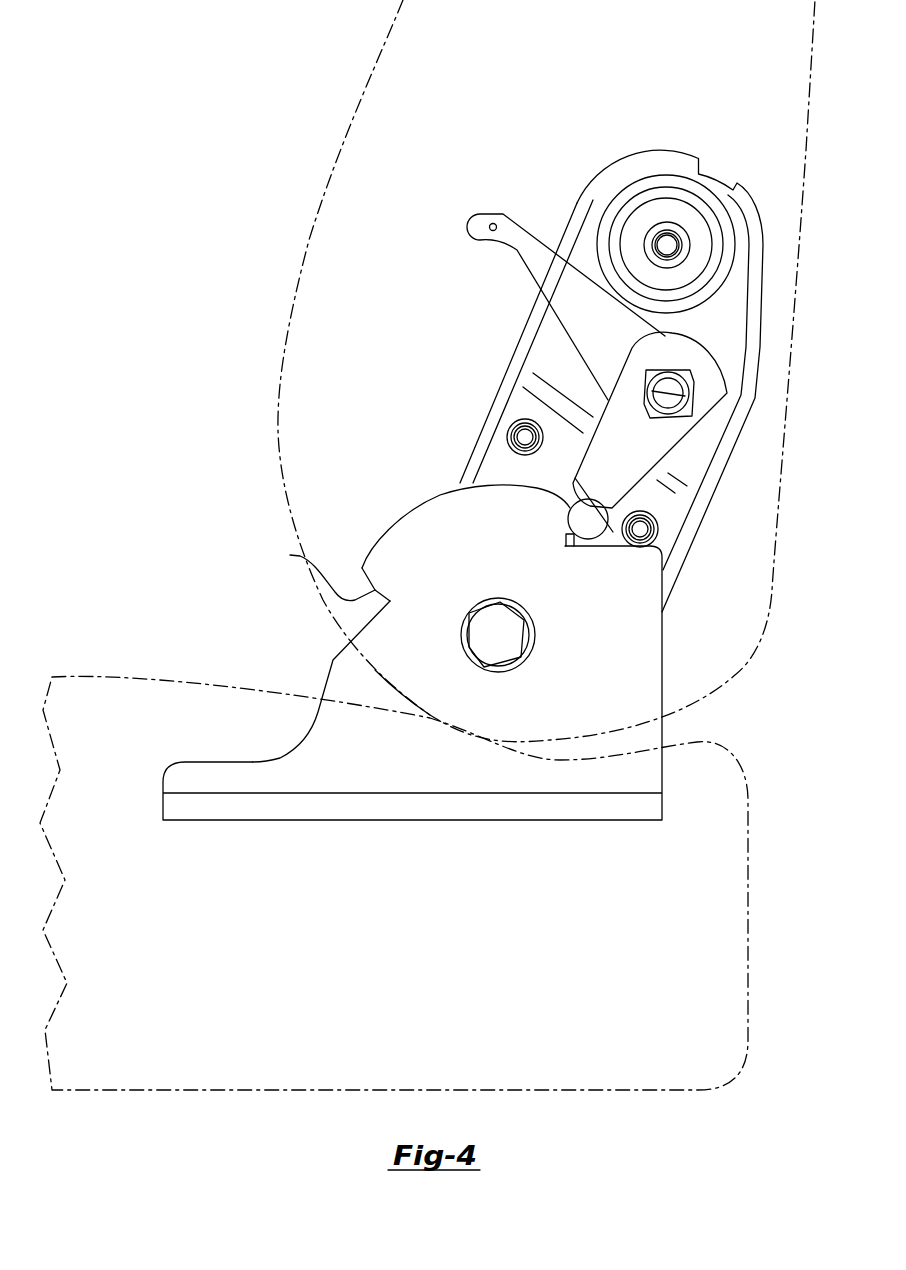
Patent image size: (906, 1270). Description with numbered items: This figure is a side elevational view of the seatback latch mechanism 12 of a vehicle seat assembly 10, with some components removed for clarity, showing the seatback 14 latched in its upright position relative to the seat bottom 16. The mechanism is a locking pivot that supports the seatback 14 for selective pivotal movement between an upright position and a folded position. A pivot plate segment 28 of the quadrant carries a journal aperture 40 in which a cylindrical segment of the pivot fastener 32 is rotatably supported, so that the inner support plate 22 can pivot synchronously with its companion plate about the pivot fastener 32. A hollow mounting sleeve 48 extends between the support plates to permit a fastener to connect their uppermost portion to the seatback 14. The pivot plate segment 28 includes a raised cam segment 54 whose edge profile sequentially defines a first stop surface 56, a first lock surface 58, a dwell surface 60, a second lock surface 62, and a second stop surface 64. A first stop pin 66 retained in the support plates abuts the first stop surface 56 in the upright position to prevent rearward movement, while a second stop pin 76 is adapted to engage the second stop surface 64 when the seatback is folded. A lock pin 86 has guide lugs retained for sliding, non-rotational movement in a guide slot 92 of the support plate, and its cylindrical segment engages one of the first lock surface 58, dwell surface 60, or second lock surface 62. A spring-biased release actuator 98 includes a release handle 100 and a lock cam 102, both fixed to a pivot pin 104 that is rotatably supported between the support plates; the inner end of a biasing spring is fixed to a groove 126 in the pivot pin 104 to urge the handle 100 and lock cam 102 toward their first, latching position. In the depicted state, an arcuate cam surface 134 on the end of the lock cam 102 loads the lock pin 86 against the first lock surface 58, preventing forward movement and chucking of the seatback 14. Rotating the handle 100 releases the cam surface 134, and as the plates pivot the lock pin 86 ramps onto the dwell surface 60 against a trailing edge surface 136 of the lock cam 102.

The vehicle seat assembly 10 is at (233, 402).
The seatback latch mechanism 12 is at (422, 467).
The seatback 14 is at (299, 227).
The seat bottom 16 is at (154, 658).
The inner support plate 22 is at (629, 141).
The pivot plate segment 28 is at (603, 687).
The pivot fastener 32 is at (512, 633).
The journal aperture 40 is at (477, 663).
The hollow mounting sleeve 48 is at (673, 230).
The raised cam segment 54 is at (407, 540).
The first stop surface 56 is at (608, 547).
The first lock surface 58 is at (570, 535).
The dwell surface 60 is at (457, 485).
The second lock surface 62 is at (292, 555).
The second stop surface 64 is at (320, 713).
The first stop pin 66 is at (656, 531).
The second stop pin 76 is at (503, 430).
The lock pin 86 is at (568, 516).
The guide slot 92 is at (577, 547).
The release actuator 98 is at (563, 352).
The release handle 100 is at (582, 331).
The lock cam 102 is at (613, 462).
The pivot pin 104 is at (674, 383).
The groove 126 is at (684, 395).
The arcuate cam surface 134 is at (505, 432).
The trailing edge surface 136 is at (665, 505).